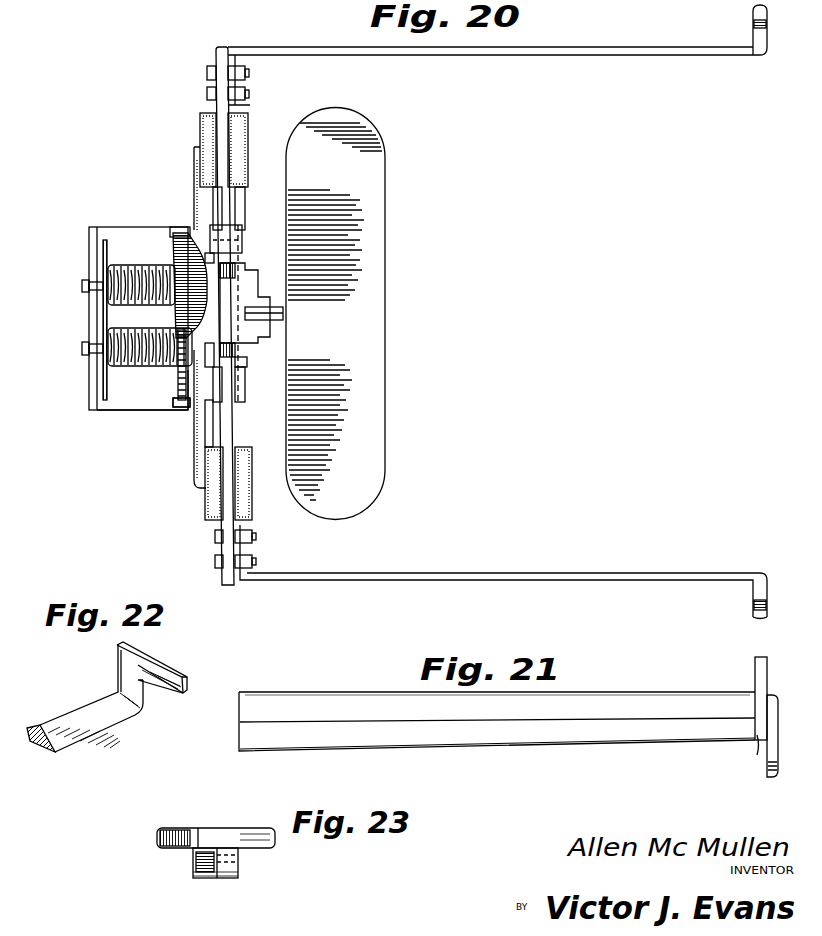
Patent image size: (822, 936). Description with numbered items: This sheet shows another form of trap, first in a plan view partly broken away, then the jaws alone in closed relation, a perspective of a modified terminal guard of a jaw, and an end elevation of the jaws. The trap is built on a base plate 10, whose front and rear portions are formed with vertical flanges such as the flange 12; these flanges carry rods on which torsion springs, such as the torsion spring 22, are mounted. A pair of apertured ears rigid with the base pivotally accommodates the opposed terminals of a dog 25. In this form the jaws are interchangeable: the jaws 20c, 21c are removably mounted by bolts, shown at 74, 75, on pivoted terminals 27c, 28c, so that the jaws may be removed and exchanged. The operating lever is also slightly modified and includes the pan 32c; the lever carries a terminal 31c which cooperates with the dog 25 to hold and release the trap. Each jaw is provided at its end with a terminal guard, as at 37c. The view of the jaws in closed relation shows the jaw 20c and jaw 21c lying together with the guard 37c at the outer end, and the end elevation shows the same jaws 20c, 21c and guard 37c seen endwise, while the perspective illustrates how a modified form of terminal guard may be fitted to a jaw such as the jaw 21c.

In FIG. 20, the base plate 10 is at (118, 402).
In FIG. 20, the vertical flange 12 is at (89, 320).
In FIG. 20, the torsion spring 22 is at (143, 268).
In FIG. 20, the dog 25 is at (178, 385).
In FIG. 20, the pivoted terminal 28c is at (226, 138).
In FIG. 20, the pivoted terminal 27c is at (230, 510).
In FIG. 20, the terminal 31c is at (252, 305).
In FIG. 20, the pan 32c is at (335, 314).
In FIG. 20, the bolt 75 is at (252, 97).
In FIG. 20, the bolt 74 is at (258, 562).
In FIG. 20, the interchangeable jaw 21c is at (656, 66).
In FIG. 21, the interchangeable jaw 21c is at (590, 694).
In FIG. 22, the interchangeable jaw 21c is at (66, 716).
In FIG. 23, the interchangeable jaw 21c is at (225, 880).
In FIG. 20, the interchangeable jaw 20c is at (589, 573).
In FIG. 21, the interchangeable jaw 20c is at (515, 744).
In FIG. 23, the interchangeable jaw 20c is at (203, 880).
In FIG. 20, the terminal guard 37c is at (755, 24).
In FIG. 21, the terminal guard 37c is at (756, 682).
In FIG. 22, the terminal guard 37c is at (138, 663).
In FIG. 23, the terminal guard 37c is at (172, 828).